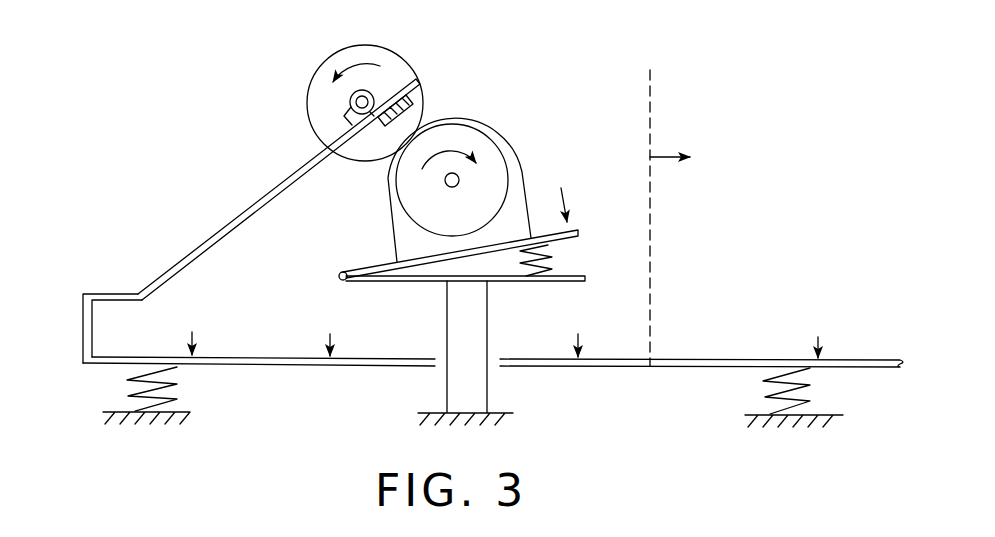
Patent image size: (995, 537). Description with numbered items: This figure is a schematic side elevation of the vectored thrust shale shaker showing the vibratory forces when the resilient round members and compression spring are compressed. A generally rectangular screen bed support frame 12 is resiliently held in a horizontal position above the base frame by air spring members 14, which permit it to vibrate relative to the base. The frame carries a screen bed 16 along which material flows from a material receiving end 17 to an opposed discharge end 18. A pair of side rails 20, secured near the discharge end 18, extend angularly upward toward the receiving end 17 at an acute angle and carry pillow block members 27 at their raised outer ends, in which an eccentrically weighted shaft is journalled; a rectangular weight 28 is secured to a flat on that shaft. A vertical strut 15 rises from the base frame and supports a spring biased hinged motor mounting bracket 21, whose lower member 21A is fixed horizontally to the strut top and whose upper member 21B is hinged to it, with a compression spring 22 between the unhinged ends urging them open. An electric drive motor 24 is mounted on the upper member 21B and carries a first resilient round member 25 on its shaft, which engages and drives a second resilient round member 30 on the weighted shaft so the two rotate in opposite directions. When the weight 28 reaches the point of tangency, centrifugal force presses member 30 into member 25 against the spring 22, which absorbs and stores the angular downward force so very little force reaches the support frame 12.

The screen bed support frame 12 is at (266, 366).
The air spring members 14 is at (134, 396).
The vertical strut 15 is at (488, 378).
The screen bed 16 is at (328, 372).
The material receiving end 17 is at (877, 338).
The discharge end 18 is at (144, 337).
The side rails 20 is at (242, 208).
The spring biased hinged motor mounting bracket 21 is at (484, 262).
The lower member 21A is at (560, 283).
The upper member 21B is at (577, 230).
The compression spring 22 is at (551, 256).
The electric drive motor 24 is at (514, 156).
The first resilient round member 25 is at (478, 120).
The pillow block members 27 is at (352, 113).
The rectangular weight 28 is at (421, 84).
The second resilient round member 30 is at (388, 46).